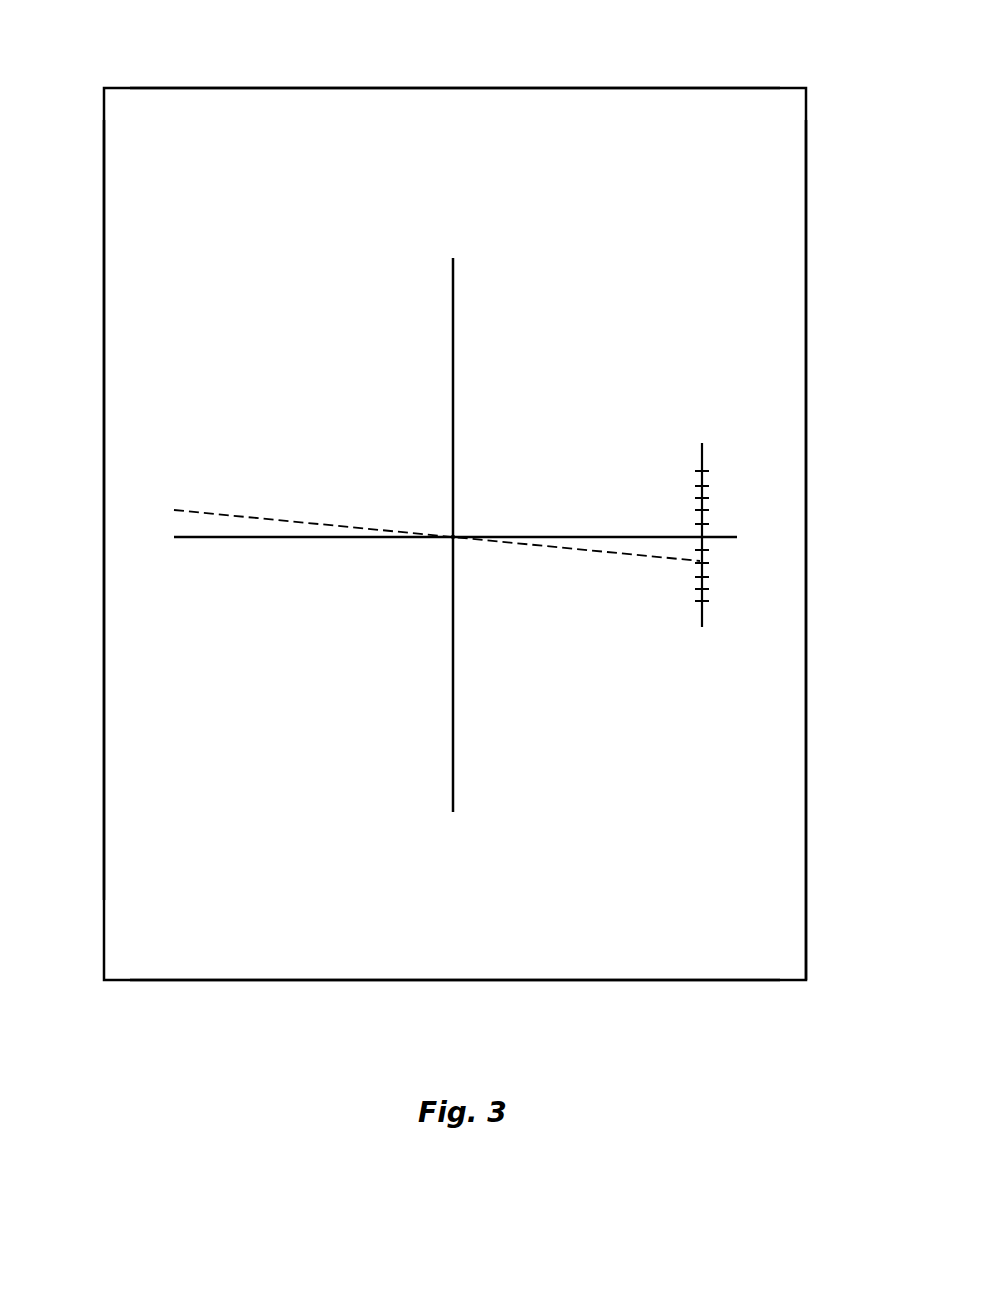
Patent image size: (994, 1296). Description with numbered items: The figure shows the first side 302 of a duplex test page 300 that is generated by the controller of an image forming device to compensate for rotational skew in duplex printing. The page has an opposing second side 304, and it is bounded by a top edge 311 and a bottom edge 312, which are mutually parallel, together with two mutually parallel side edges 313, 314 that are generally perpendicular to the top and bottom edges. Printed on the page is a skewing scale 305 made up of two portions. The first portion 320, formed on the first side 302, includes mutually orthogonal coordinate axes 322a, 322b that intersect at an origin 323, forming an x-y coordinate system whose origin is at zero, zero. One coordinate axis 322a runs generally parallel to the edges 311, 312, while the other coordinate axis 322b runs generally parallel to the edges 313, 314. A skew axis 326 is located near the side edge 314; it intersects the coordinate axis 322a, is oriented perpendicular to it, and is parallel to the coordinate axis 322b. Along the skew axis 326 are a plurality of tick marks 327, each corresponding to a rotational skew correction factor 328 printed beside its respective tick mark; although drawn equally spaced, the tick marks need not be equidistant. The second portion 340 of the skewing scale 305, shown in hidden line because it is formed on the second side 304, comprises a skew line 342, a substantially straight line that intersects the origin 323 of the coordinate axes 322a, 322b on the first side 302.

The duplex test page 300 is at (208, 88).
The top edge 311 is at (405, 88).
The bottom edge 312 is at (315, 982).
The second side 304 is at (610, 982).
The first side 302 is at (758, 967).
The side edge 313 is at (102, 609).
The side edge 314 is at (807, 477).
The skewing scale 305 is at (672, 193).
The first portion 320 is at (257, 257).
The coordinate axis 322a is at (265, 540).
The coordinate axis 322b is at (455, 335).
The origin 323 is at (447, 540).
The second portion 340 is at (310, 498).
The skew line 342 is at (229, 514).
The skew axis 326 is at (704, 455).
The tick marks 327 is at (690, 510).
The rotational skew correction factor 328 is at (735, 510).